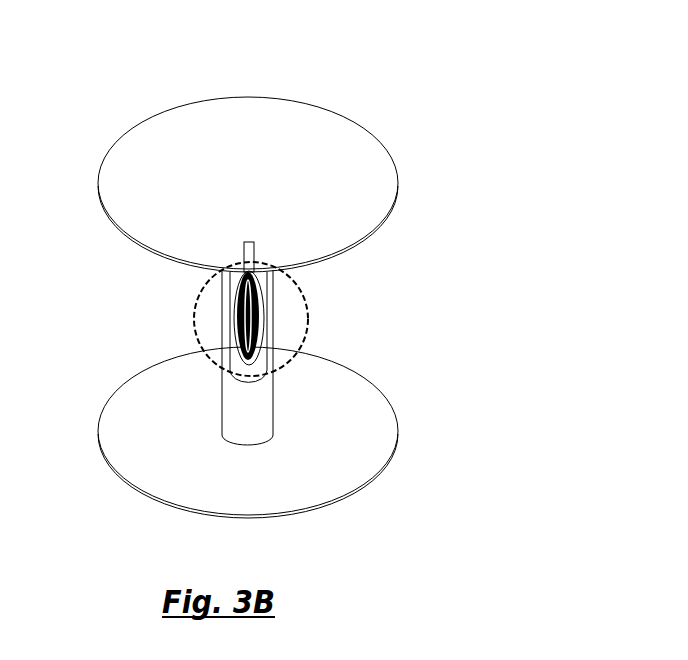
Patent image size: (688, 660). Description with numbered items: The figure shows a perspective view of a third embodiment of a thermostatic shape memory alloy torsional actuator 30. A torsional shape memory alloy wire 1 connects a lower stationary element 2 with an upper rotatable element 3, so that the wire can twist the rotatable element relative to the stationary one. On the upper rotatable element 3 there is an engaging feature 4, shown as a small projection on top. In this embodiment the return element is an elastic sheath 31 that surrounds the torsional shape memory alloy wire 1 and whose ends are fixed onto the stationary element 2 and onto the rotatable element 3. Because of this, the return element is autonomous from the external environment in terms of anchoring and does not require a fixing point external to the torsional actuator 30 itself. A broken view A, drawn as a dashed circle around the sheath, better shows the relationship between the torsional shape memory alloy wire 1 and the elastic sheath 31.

The thermostatic shape memory alloy torsional actuator 30 is at (470, 258).
The upper rotatable element 3 is at (126, 152).
The lower stationary element 2 is at (320, 475).
The elastic sheath 31 is at (235, 398).
The engaging feature 4 is at (252, 248).
The torsional shape memory alloy wire 1 is at (248, 312).
The broken view A is at (259, 319).